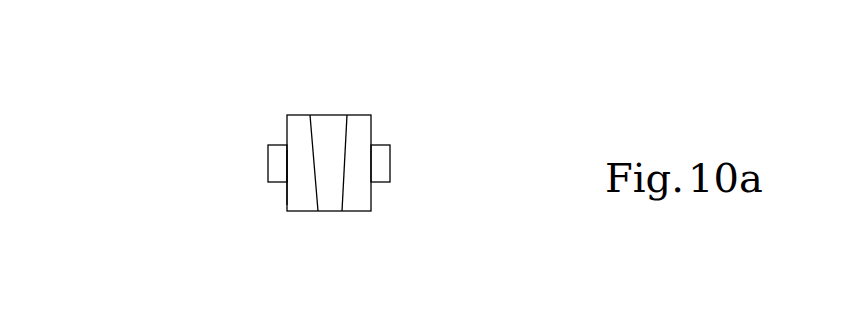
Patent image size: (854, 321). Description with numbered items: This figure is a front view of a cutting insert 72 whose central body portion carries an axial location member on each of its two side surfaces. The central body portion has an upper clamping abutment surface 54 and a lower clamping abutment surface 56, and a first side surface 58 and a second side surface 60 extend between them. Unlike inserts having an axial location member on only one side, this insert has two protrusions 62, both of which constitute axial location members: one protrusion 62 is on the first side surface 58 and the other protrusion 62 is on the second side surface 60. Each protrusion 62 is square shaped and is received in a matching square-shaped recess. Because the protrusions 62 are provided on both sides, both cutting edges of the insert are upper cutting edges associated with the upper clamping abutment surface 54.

The upper clamping abutment surface 54 is at (323, 117).
The lower clamping abutment surface 56 is at (328, 213).
The first side surface 58 is at (373, 198).
The second side surface 60 is at (275, 198).
The protrusion 62 is at (268, 162).
The cutting insert 72 is at (485, 52).